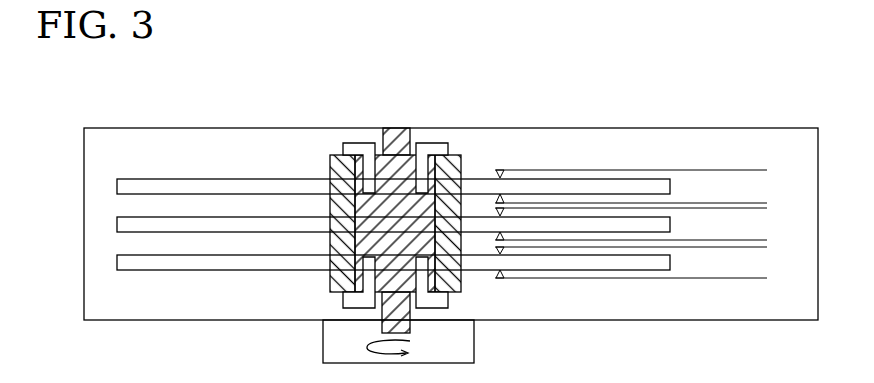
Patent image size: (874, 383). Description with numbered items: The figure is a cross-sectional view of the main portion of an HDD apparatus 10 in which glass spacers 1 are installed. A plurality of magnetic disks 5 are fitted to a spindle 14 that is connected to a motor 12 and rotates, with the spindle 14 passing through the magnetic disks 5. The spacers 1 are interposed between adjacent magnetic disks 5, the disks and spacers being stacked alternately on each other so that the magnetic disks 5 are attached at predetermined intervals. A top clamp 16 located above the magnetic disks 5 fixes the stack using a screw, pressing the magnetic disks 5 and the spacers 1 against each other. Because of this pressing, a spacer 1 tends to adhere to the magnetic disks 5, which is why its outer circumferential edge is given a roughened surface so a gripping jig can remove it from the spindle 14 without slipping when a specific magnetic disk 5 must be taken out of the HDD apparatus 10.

The spacer 1 is at (324, 157).
The magnetic disk 5 is at (218, 179).
The HDD apparatus 10 is at (775, 110).
The motor 12 is at (457, 347).
The spindle 14 is at (433, 156).
The top clamp 16 is at (390, 130).